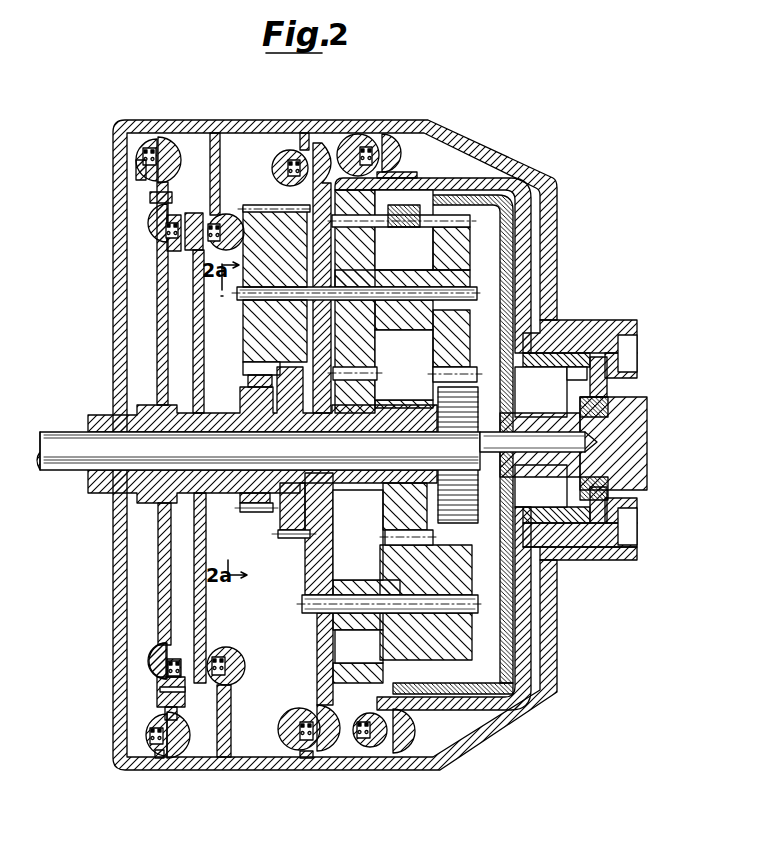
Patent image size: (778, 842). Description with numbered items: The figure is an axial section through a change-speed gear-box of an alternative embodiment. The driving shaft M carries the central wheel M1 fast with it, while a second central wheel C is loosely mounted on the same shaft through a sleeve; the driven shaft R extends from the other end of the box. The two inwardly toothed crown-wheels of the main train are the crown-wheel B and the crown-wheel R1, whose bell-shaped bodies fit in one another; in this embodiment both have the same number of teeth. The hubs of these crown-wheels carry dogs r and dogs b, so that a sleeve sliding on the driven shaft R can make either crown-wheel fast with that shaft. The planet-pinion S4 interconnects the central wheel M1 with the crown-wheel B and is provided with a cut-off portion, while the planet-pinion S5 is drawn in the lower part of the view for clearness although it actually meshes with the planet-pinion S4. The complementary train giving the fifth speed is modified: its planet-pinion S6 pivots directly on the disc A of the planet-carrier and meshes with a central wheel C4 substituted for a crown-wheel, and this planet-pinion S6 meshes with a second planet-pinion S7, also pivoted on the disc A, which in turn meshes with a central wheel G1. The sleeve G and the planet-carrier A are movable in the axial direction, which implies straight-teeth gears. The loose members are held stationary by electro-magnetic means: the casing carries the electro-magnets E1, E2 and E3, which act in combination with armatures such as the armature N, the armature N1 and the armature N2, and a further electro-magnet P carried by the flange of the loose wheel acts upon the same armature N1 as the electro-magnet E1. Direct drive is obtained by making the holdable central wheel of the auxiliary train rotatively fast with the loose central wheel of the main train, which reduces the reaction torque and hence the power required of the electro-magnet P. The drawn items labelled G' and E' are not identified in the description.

The driving shaft M is at (59, 432).
The central wheel M1 is at (478, 507).
The driven shaft R is at (644, 423).
The crown-wheel R1 is at (470, 204).
The crown-wheel B is at (441, 186).
The planet-carrier disc A is at (333, 548).
The second central wheel C is at (393, 511).
The central wheel C4 is at (293, 539).
The sleeve G is at (242, 503).
The central wheel G1 is at (257, 514).
The carrier bar G' is at (189, 466).
The electro-magnet P is at (148, 243).
The armature N is at (181, 159).
The armature N1 is at (193, 213).
The armature N2 is at (312, 133).
The ball bearing E' is at (135, 179).
The electro-magnet E1 is at (227, 214).
The electro-magnet E2 is at (281, 158).
The electro-magnet E3 is at (358, 134).
The planet-pinion S4 is at (437, 249).
The planet-pinion S5 is at (470, 622).
The planet-pinion S6 is at (284, 207).
The second planet-pinion S7 is at (248, 360).
The dogs b is at (637, 372).
The dogs r is at (567, 381).